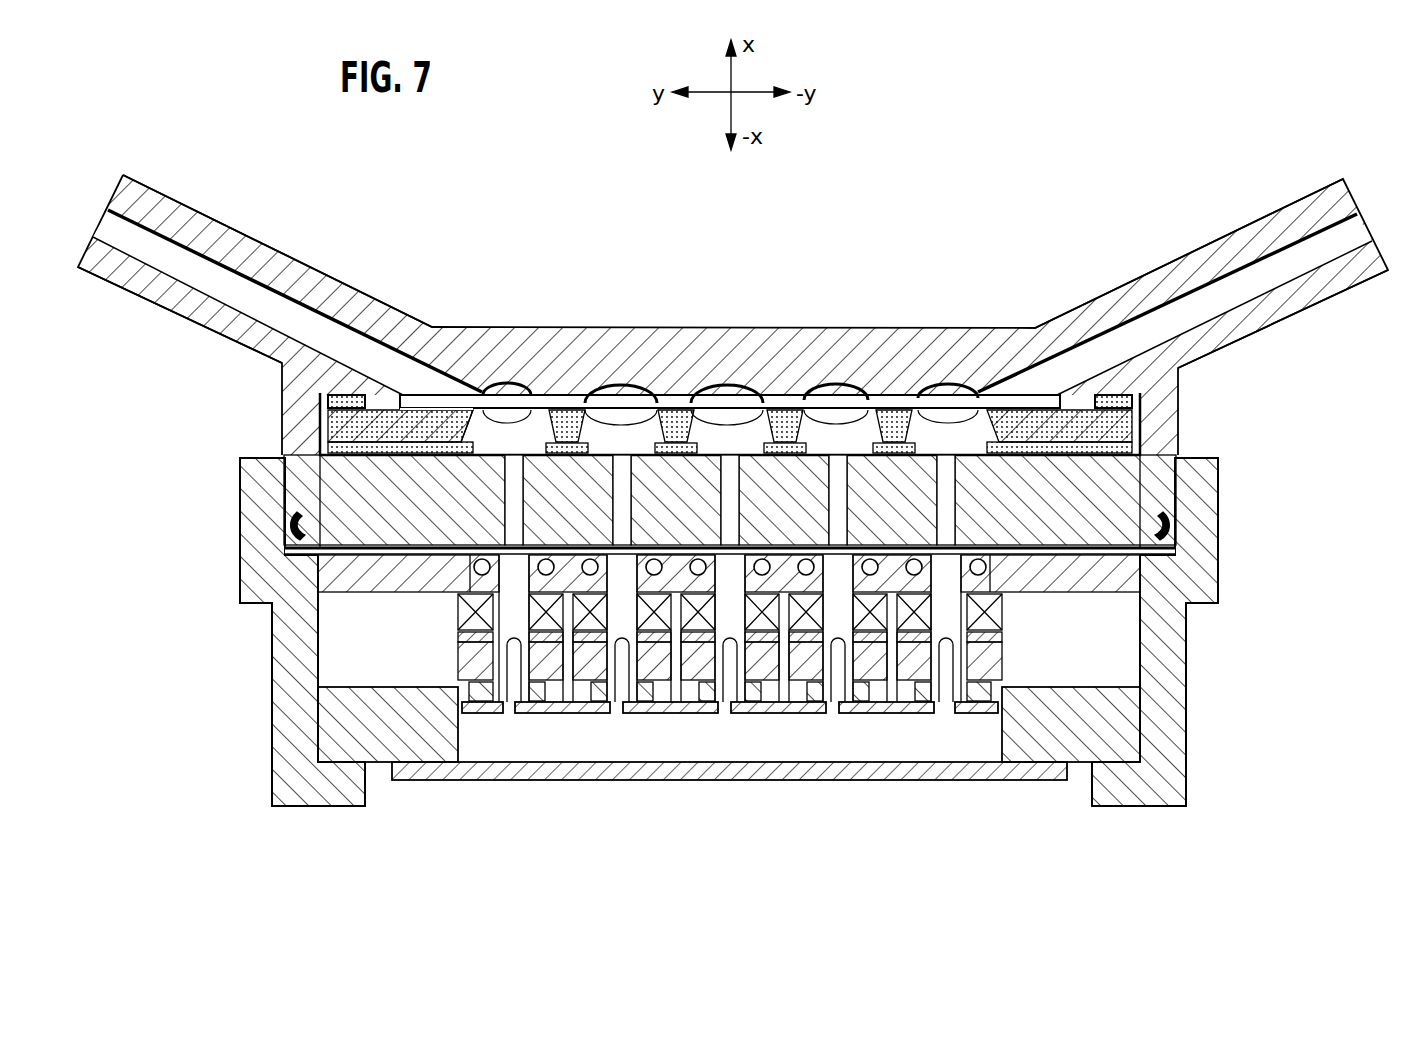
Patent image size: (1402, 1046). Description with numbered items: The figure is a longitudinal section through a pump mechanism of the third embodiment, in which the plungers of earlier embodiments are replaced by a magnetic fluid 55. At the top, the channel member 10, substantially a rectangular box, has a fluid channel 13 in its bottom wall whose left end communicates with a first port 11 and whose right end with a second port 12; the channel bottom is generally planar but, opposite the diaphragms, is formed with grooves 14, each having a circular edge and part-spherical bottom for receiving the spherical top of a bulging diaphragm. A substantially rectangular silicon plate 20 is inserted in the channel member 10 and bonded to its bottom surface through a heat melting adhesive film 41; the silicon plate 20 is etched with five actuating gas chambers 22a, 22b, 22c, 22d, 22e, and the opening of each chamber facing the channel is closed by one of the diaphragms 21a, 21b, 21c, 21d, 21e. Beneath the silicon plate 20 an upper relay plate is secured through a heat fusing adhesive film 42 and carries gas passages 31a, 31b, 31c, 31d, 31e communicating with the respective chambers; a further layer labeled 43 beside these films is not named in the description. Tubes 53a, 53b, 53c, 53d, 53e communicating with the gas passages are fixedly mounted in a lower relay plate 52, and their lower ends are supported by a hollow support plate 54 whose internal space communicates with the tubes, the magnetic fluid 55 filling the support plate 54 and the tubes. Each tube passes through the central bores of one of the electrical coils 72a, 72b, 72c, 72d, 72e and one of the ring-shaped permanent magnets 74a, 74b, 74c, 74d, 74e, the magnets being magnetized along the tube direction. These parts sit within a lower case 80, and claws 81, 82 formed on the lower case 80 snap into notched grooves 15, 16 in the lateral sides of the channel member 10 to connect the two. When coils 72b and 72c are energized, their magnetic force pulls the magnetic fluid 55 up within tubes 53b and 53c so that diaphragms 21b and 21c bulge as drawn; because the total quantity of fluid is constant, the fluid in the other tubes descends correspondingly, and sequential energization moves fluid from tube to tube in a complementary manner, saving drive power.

The channel member 10 is at (1075, 228).
The first port 11 is at (183, 262).
The second port 12 is at (1245, 280).
The fluid channel 13 is at (425, 396).
The grooves 14 is at (592, 408).
The notched groove 15 is at (1192, 486).
The notched groove 16 is at (272, 485).
The silicon plate 20 is at (320, 412).
The diaphragm 21a is at (437, 405).
The diaphragm 21b is at (624, 450).
The diaphragm 21c is at (735, 450).
The diaphragm 21d is at (845, 450).
The diaphragm 21e is at (952, 450).
The actuating gas chamber 22a is at (478, 425).
The actuating gas chamber 22b is at (650, 430).
The actuating gas chamber 22c is at (770, 430).
The actuating gas chamber 22d is at (890, 430).
The actuating gas chamber 22e is at (995, 425).
The gas passage 31a is at (495, 386).
The gas passage 31b is at (626, 384).
The gas passage 31c is at (746, 384).
The gas passage 31d is at (852, 386).
The gas passage 31e is at (960, 388).
The heat melting adhesive film 41 is at (328, 398).
The heat fusing adhesive film 42 is at (1132, 398).
The frame body block 43 is at (330, 436).
The lower relay plate 52 is at (1054, 584).
The tube 53a is at (470, 612).
The tube 53b is at (600, 640).
The tube 53c is at (705, 640).
The tube 53d is at (815, 640).
The tube 53e is at (975, 640).
The support plate 54 is at (1040, 700).
The magnetic fluid 55 is at (502, 737).
The electrical coil 72a is at (500, 640).
The electrical coil 72b is at (616, 703).
The electrical coil 72c is at (724, 703).
The electrical coil 72d is at (832, 703).
The electrical coil 72e is at (940, 703).
The ring-shaped permanent magnet 74a is at (465, 714).
The ring-shaped permanent magnet 74b is at (605, 714).
The ring-shaped permanent magnet 74c is at (712, 714).
The ring-shaped permanent magnet 74d is at (820, 714).
The ring-shaped permanent magnet 74e is at (930, 714).
The lower case 80 is at (1188, 640).
The claw 81 is at (1172, 540).
The claw 82 is at (290, 532).